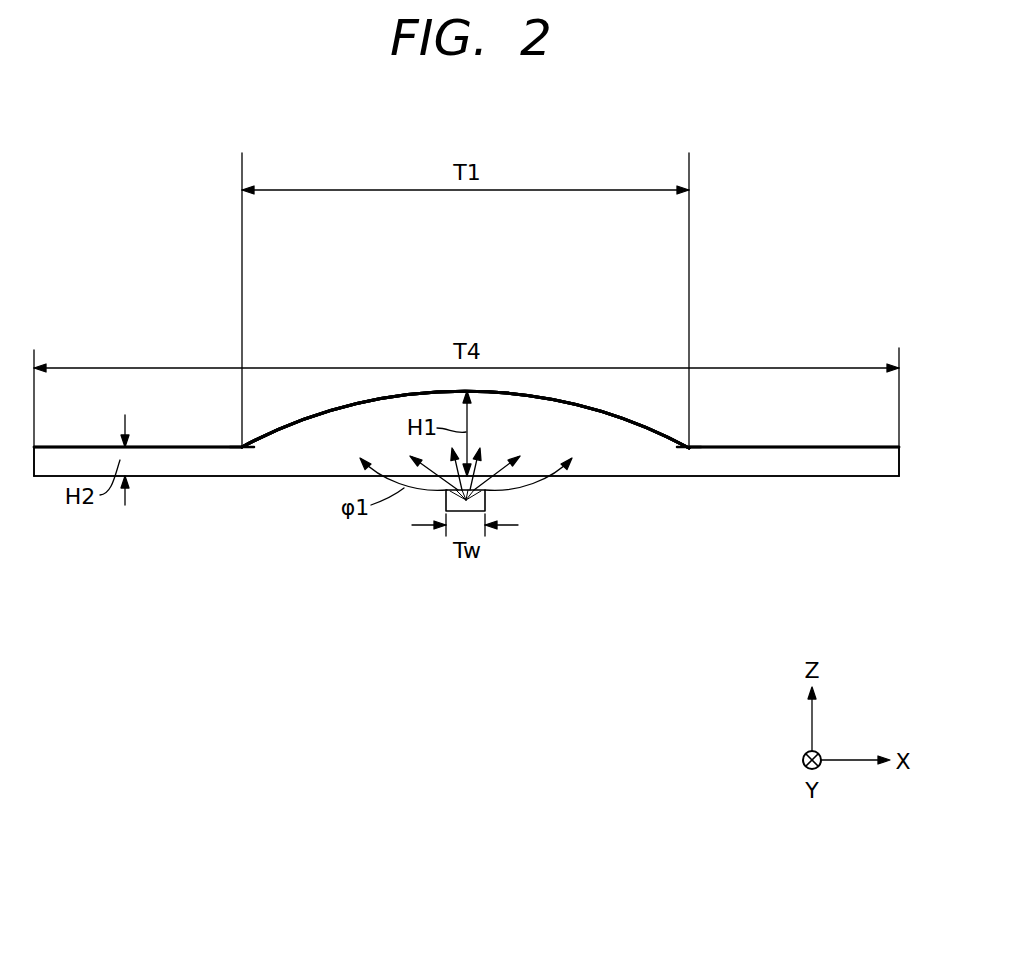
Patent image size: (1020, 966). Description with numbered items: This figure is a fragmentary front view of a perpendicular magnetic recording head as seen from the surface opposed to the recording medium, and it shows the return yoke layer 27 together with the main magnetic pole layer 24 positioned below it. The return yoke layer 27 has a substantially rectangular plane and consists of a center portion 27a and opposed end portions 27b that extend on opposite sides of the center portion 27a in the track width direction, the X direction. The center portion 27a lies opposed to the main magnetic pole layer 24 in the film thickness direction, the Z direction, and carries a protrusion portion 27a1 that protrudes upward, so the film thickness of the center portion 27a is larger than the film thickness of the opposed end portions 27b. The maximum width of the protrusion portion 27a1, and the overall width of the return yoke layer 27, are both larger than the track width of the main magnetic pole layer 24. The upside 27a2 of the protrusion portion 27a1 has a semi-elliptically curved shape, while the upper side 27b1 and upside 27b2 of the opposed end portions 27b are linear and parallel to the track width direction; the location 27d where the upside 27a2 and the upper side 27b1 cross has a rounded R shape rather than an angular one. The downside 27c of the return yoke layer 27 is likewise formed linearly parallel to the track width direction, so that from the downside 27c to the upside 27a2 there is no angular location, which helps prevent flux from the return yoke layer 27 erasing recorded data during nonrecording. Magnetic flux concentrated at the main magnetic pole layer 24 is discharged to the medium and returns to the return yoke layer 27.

The return yoke layer 27 is at (657, 432).
The center portion 27a is at (591, 456).
The protrusion portion 27a1 is at (553, 425).
The upside of the protrusion portion 27a2 is at (344, 404).
The opposed end portions 27b is at (183, 458).
The upper side of the opposed end portions 27b1 is at (70, 447).
The upside of the opposed end portions 27b2 is at (843, 447).
The downside of the return yoke layer 27c is at (218, 477).
The crossing location 27d is at (243, 450).
The main magnetic pole layer 24 is at (446, 503).